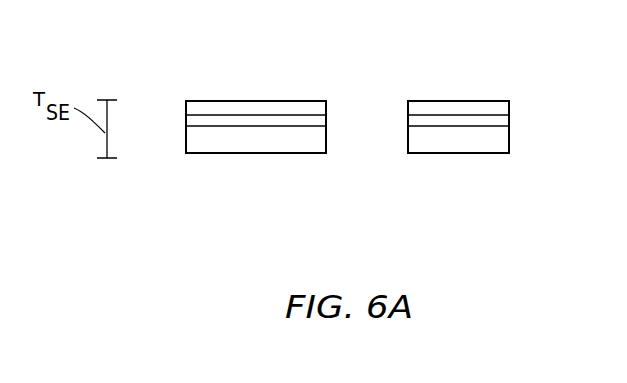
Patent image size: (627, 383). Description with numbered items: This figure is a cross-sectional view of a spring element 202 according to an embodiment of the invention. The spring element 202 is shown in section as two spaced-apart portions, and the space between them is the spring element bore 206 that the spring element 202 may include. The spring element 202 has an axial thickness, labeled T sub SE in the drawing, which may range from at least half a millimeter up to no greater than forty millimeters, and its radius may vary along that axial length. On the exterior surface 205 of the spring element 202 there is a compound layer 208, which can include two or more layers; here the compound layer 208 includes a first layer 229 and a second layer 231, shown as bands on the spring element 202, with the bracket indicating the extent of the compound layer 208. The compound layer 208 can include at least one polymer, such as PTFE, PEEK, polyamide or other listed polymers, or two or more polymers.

The spring element 202 is at (287, 100).
The exterior surface 205 is at (449, 107).
The spring element bore 206 is at (364, 90).
The compound layer 208 is at (178, 102).
The first layer 229 is at (509, 107).
The second layer 231 is at (509, 120).